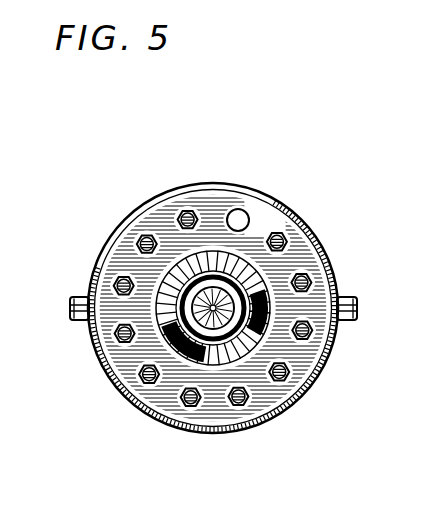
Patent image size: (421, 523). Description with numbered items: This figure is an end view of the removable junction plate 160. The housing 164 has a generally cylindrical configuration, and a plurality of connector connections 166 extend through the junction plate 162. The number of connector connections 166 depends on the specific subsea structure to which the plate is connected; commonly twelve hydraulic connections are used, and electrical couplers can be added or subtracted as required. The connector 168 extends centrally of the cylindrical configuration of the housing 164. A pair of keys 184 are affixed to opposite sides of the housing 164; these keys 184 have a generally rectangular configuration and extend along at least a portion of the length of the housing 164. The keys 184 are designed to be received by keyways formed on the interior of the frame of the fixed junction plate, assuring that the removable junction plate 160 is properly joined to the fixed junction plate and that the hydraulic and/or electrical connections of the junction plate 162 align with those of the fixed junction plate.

The removable junction plate 160 is at (237, 171).
The junction plate 162 is at (262, 223).
The housing 164 is at (313, 241).
The connector connections 166 is at (172, 212).
The connector 168 is at (203, 331).
The keys 184 is at (72, 321).